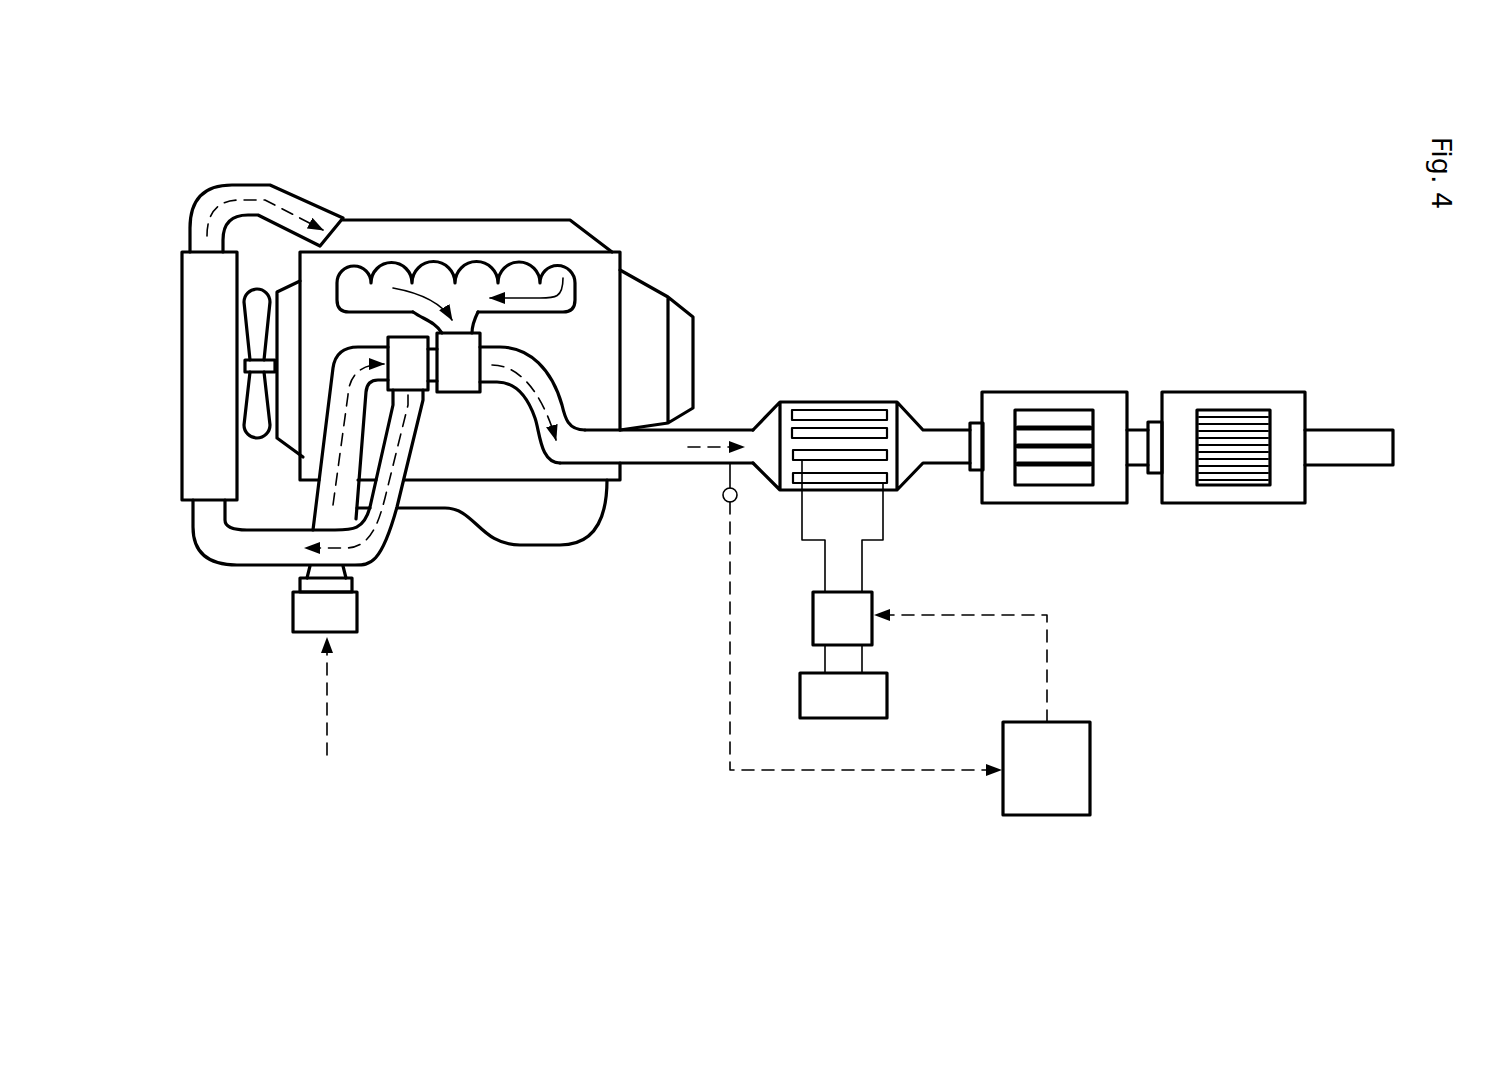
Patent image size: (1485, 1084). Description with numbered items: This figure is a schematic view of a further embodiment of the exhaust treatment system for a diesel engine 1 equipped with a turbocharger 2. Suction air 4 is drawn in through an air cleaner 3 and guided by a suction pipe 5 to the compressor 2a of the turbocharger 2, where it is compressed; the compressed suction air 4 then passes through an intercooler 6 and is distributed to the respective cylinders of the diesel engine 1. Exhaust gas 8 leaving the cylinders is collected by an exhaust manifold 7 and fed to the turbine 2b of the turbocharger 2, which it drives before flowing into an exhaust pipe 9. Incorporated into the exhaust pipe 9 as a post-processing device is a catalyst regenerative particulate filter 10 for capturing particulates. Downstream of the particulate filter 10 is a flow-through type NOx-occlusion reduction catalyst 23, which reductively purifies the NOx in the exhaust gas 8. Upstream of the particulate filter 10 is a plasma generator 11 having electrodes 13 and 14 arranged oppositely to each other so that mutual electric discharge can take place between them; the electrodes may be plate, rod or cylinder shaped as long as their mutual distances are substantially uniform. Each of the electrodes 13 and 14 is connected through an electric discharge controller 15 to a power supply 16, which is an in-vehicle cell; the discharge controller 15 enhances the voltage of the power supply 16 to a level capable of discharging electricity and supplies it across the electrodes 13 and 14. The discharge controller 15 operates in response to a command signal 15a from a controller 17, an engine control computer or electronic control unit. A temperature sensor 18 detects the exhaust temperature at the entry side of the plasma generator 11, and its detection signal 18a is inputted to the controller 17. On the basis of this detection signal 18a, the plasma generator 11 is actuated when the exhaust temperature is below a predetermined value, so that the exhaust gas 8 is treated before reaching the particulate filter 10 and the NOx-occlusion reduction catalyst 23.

The diesel engine 1 is at (609, 224).
The turbocharger 2 is at (406, 444).
The compressor 2a is at (410, 337).
The turbine 2b is at (470, 392).
The air cleaner 3 is at (293, 617).
The suction air 4 is at (248, 200).
The suction pipe 5 is at (293, 187).
The intercooler 6 is at (186, 348).
The exhaust manifold 7 is at (477, 272).
The exhaust gas 8 is at (432, 320).
The exhaust pipe 9 is at (637, 470).
The catalyst regenerative particulate filter 10 is at (1045, 413).
The plasma generator 11 is at (868, 429).
The electrode 13 is at (817, 452).
The electrode 14 is at (842, 473).
The electric discharge controller 15 is at (857, 603).
The command signal 15a is at (1010, 615).
The power supply 16 is at (873, 694).
The controller 17 is at (1086, 772).
The temperature sensor 18 is at (740, 496).
The detection signal 18a is at (730, 742).
The NOx-occlusion reduction catalyst 23 is at (1233, 410).